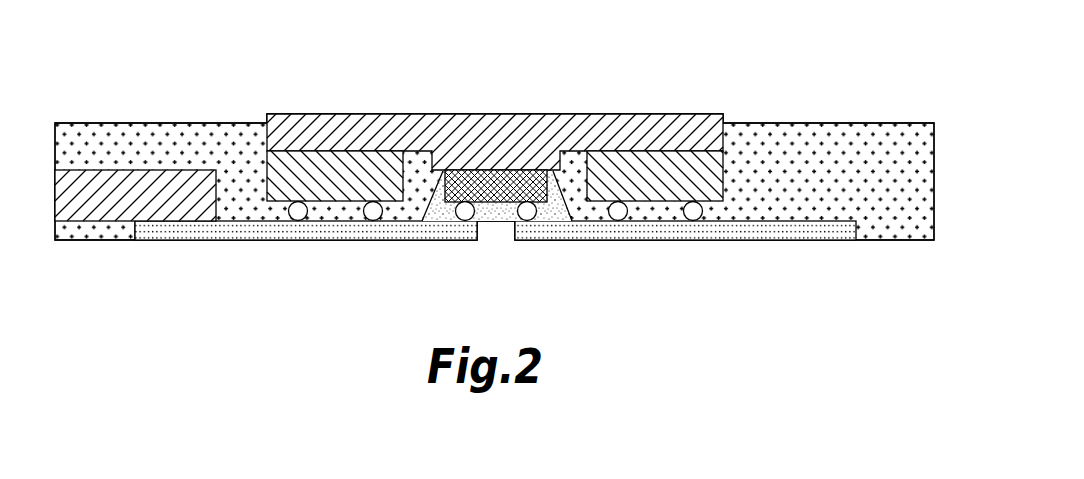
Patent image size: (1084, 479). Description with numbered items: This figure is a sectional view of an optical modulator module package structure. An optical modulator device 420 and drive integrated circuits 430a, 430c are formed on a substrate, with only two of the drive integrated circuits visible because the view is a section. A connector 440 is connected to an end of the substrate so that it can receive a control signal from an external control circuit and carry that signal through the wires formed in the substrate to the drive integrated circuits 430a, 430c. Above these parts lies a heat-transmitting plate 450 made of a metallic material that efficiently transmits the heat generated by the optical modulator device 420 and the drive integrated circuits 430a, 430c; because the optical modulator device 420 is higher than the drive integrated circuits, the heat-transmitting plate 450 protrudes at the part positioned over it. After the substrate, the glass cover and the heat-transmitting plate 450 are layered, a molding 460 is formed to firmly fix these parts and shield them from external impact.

The optical modulator device 420 is at (527, 171).
The drive integrated circuit 430a is at (337, 162).
The drive integrated circuit 430c is at (663, 163).
The connector 440 is at (123, 182).
The heat-transmitting plate 450 is at (457, 118).
The molding 460 is at (842, 133).